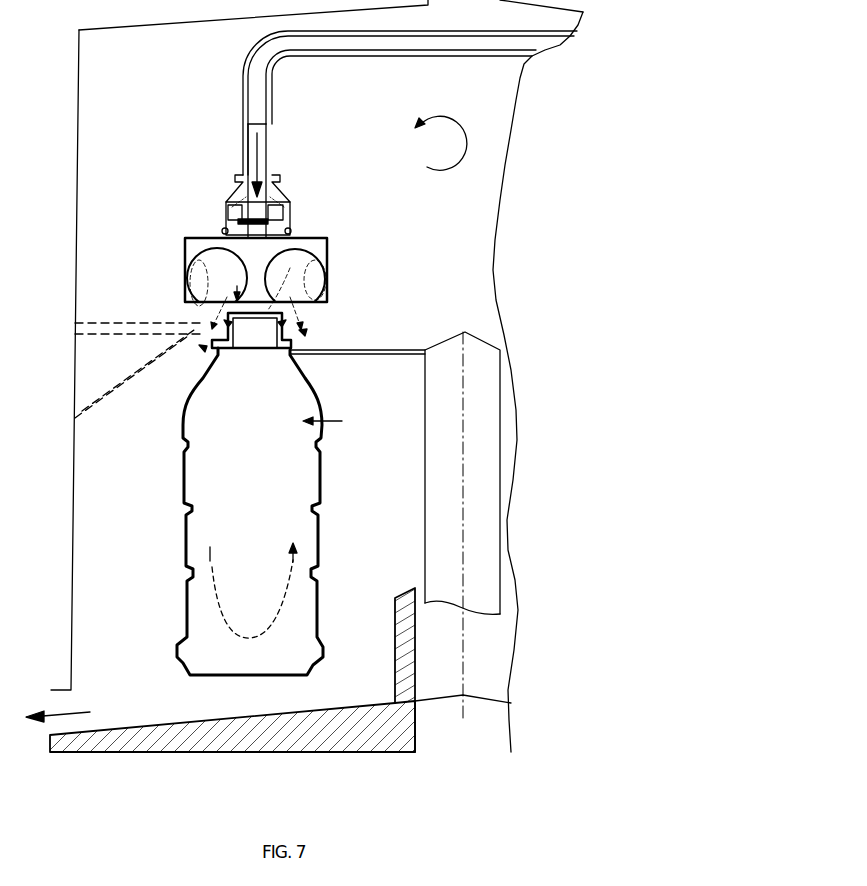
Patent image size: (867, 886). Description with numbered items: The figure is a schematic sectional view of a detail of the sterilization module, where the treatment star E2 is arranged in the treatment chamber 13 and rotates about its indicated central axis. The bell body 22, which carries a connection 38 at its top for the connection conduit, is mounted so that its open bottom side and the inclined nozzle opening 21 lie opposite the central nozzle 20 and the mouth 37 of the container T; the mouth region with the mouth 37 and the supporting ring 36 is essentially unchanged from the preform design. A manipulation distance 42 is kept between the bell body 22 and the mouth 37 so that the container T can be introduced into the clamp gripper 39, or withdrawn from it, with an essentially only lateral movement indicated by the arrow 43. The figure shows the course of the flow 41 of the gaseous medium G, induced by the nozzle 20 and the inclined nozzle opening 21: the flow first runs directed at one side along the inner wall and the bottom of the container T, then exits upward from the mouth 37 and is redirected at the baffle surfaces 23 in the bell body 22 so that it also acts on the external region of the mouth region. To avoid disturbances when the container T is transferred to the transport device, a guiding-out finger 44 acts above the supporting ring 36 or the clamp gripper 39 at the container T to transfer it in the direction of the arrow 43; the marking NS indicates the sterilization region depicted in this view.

The treatment chamber 13 is at (80, 152).
The connection 38 is at (274, 154).
The central nozzle 20 is at (290, 268).
The bell body 22 is at (185, 246).
The baffle surfaces 23 is at (203, 312).
The manipulation distance 42 is at (253, 310).
The sterilization zone NS is at (408, 248).
The treatment star E2 is at (404, 350).
The clamp gripper 39 is at (348, 350).
The supporting ring 36 is at (315, 349).
The guiding-out finger 44 is at (200, 346).
The inclined nozzle opening 21 is at (238, 320).
The mouth 37 is at (258, 320).
The arrow 43 is at (339, 423).
The container T is at (182, 488).
The flow 41 is at (210, 555).
The gaseous medium G is at (297, 598).